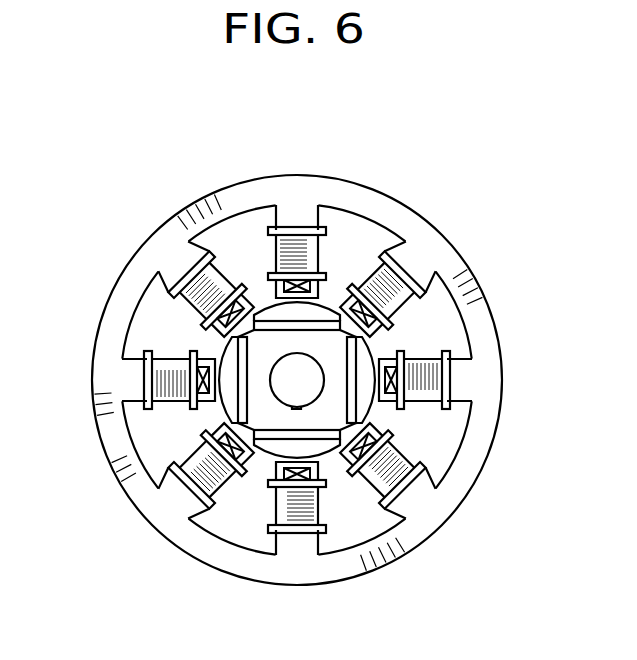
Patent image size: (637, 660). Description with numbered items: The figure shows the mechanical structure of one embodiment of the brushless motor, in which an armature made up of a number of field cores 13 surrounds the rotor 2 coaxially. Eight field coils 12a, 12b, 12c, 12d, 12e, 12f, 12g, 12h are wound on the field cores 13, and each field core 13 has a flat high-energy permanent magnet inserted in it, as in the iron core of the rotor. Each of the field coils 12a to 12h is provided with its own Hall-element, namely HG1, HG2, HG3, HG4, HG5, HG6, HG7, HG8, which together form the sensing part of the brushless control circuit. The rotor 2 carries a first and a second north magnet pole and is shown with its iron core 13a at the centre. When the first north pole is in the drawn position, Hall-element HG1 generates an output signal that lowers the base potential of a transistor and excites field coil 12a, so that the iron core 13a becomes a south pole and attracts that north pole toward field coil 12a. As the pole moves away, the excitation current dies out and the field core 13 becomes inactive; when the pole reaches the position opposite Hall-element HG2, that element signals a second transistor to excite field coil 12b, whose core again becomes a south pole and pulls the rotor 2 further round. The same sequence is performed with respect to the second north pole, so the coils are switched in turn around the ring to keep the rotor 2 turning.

The rotor 2 is at (362, 407).
The field coil 12a is at (165, 292).
The field coil 12b is at (152, 398).
The field coil 12c is at (203, 484).
The field coil 12d is at (307, 515).
The field coil 12e is at (403, 473).
The field coil 12f is at (423, 377).
The field coil 12g is at (397, 270).
The field coil 12h is at (293, 240).
The field core 13 is at (283, 208).
The iron core 13a is at (245, 336).
The Hall-element HG1 is at (273, 288).
The Hall-element HG2 is at (218, 322).
The Hall-element HG3 is at (204, 406).
The Hall-element HG4 is at (241, 470).
The Hall-element HG5 is at (318, 471).
The Hall-element HG6 is at (383, 424).
The Hall-element HG7 is at (393, 352).
The Hall-element HG8 is at (350, 298).